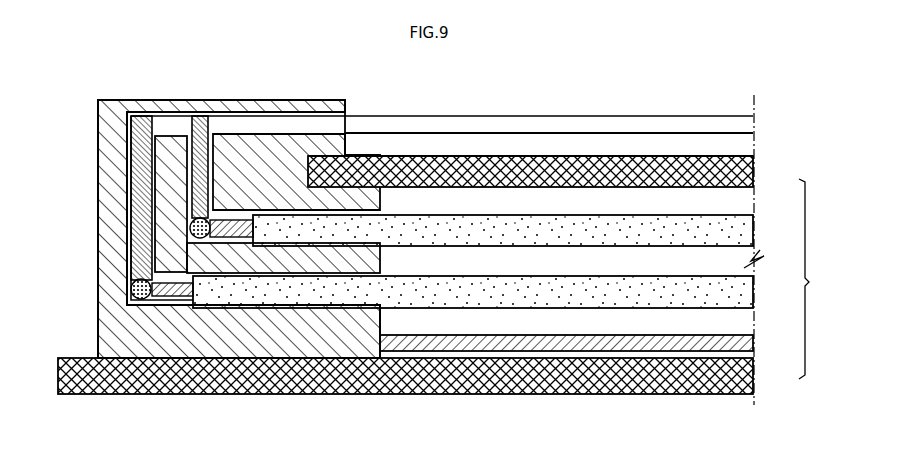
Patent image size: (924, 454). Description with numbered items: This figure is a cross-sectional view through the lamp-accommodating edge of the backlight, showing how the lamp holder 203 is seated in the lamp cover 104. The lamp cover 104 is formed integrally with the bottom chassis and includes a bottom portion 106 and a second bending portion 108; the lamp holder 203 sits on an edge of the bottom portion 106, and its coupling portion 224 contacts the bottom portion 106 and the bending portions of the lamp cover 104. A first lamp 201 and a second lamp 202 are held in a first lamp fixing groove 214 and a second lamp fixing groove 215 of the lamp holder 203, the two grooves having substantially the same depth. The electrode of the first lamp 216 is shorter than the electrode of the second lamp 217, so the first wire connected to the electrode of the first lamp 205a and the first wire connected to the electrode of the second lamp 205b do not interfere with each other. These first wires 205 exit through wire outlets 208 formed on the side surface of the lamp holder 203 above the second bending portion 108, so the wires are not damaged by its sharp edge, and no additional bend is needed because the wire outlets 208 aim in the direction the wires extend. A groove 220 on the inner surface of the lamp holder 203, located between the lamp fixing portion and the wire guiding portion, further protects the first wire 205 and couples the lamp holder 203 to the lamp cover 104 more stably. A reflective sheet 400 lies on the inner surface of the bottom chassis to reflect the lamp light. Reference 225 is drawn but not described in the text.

The lamp cover 104 is at (819, 279).
The bottom portion 106 is at (746, 377).
The second bending portion 108 is at (746, 175).
The first lamp 201 is at (533, 222).
The second lamp 202 is at (568, 292).
The lamp holder 203 is at (140, 325).
The first wires 205 is at (498, 127).
The first wire connected to the electrode of the first lamp 205a is at (197, 151).
The first wire connected to the electrode of the second lamp 205b is at (133, 175).
The wire outlets 208 is at (347, 104).
The first lamp fixing groove 214 is at (293, 207).
The second lamp fixing groove 215 is at (286, 309).
The electrode of the first lamp 216 is at (223, 238).
The electrode of the second lamp 217 is at (152, 302).
The groove 220 is at (348, 133).
The coupling portion 224 is at (386, 156).
The boundary layer 225 is at (301, 207).
The reflective sheet 400 is at (685, 342).